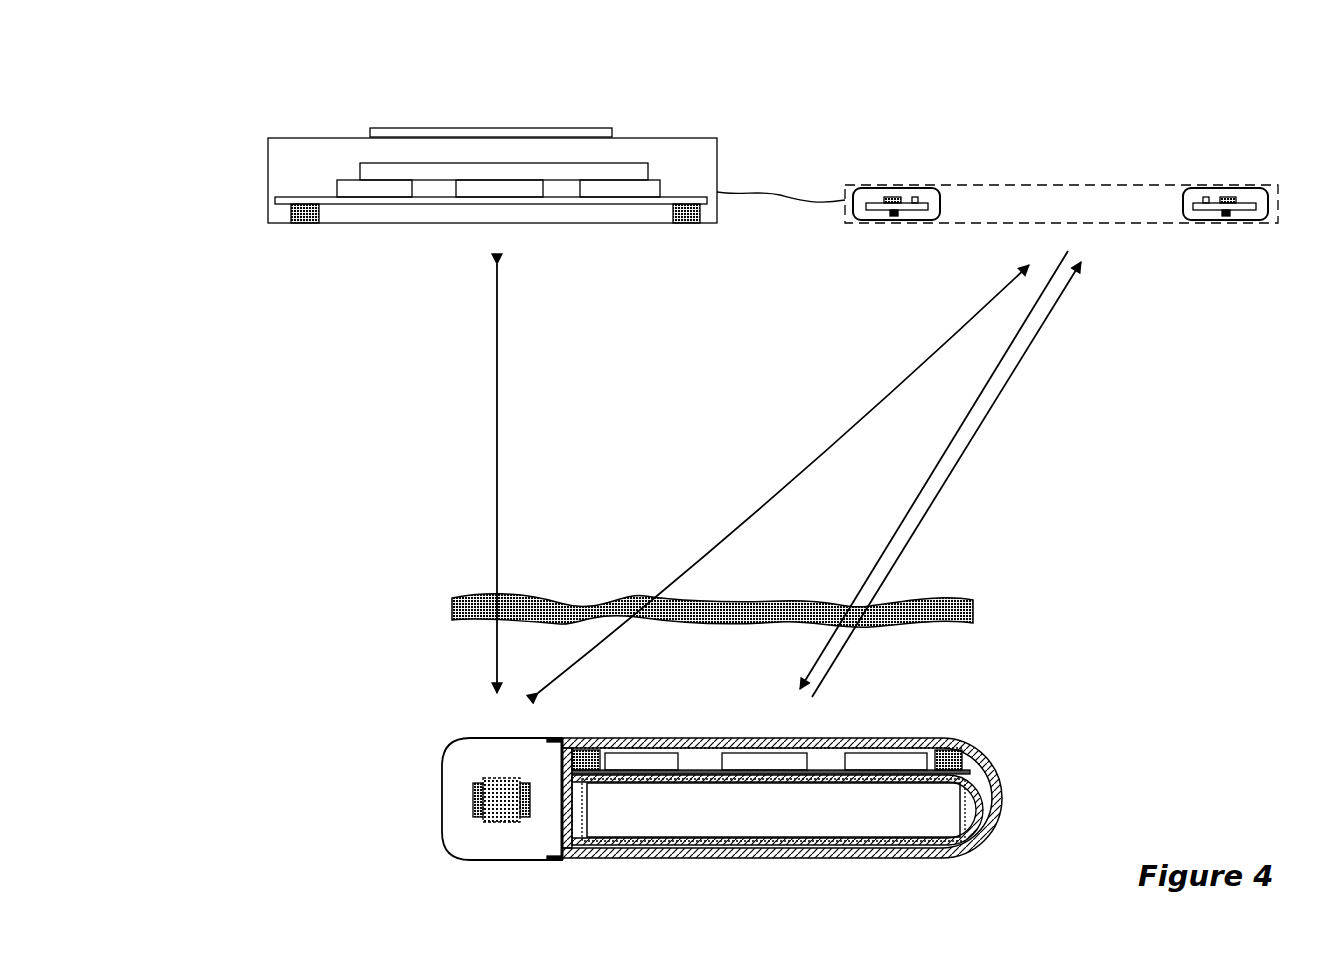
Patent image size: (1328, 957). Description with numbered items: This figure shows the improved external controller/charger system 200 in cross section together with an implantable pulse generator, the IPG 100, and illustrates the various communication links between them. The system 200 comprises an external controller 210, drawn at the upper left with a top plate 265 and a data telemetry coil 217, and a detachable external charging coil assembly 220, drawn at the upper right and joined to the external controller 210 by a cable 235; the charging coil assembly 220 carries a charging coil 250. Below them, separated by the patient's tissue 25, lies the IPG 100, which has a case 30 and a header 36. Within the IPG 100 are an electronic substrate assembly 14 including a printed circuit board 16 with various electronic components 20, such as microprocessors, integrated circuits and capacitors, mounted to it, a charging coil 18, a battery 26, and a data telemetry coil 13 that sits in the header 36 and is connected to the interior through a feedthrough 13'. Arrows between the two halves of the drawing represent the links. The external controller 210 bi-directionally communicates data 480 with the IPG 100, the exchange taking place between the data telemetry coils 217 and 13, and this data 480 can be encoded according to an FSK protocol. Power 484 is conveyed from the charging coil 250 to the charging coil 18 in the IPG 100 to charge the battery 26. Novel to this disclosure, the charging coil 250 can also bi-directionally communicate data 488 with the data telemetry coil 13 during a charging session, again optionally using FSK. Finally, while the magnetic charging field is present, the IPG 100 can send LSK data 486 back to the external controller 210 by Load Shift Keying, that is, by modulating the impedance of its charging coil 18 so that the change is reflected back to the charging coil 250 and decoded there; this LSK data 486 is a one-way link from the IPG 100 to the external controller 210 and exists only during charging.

The external controller/charger system 200 is at (1216, 66).
The external controller 210 is at (340, 94).
The charger top plate 265 is at (563, 128).
The cable 235 is at (737, 193).
The data telemetry coil 217 is at (292, 217).
The external charging coil assembly 220 is at (1012, 139).
The charging coil 250 is at (893, 200).
The data 480 is at (449, 478).
The data 488 is at (783, 479).
The power 484 is at (934, 470).
The LSK data 486 is at (957, 479).
The patient tissue 25 is at (950, 610).
The IPG 100 is at (420, 684).
The device case 30 is at (608, 858).
The header 36 is at (468, 738).
The feedthrough 13' is at (509, 788).
The data telemetry coil 13 is at (501, 817).
The electronic substrate assembly 14 is at (700, 770).
The printed circuit board 16 is at (820, 766).
The electronic components 20 is at (640, 758).
The charging coil 18 is at (585, 746).
The battery 26 is at (773, 810).